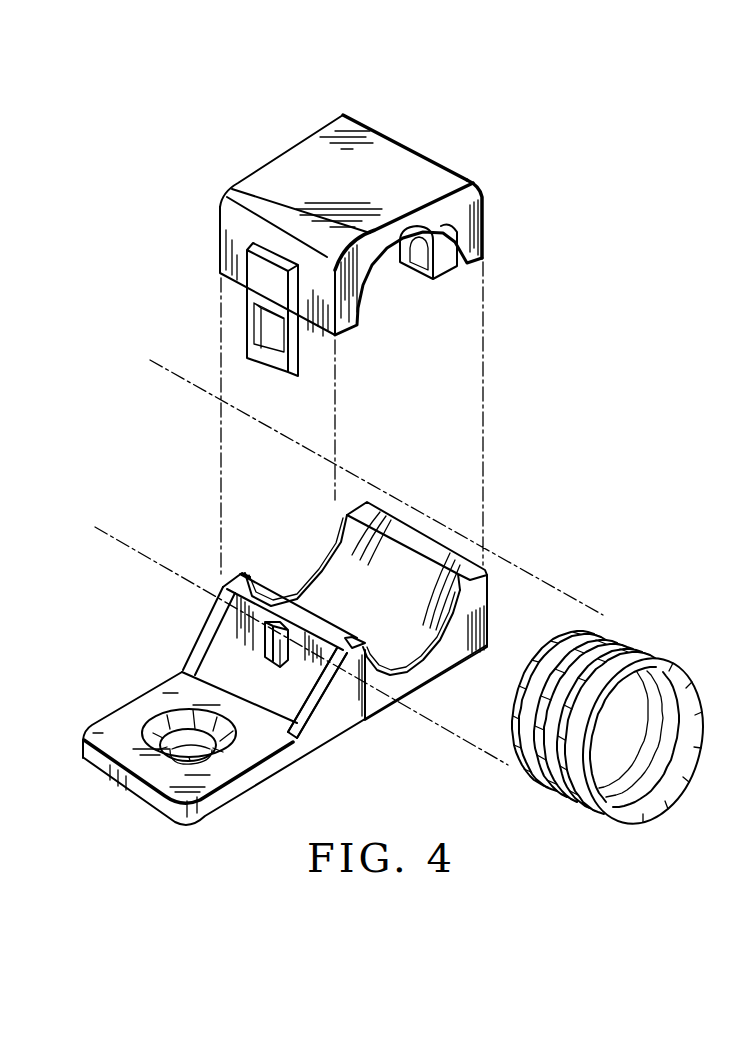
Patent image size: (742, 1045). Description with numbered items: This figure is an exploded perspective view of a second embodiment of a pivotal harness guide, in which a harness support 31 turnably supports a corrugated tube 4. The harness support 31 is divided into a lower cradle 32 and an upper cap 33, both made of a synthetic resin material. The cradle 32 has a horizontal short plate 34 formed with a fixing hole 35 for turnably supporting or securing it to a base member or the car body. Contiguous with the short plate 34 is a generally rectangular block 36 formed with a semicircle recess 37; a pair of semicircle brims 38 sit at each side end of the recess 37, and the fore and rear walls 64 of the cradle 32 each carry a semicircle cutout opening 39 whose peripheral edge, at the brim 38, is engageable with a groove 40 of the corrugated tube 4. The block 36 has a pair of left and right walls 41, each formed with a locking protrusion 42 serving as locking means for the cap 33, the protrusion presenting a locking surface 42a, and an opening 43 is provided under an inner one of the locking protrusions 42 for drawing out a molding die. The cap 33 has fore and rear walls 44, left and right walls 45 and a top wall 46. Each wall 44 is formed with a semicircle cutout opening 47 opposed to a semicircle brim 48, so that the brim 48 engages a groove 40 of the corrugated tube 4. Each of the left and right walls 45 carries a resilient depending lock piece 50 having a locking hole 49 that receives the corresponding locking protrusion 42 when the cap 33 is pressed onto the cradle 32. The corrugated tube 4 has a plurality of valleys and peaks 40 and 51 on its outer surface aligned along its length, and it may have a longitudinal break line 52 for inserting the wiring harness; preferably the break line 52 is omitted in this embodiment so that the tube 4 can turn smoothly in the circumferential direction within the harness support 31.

The corrugated tube 4 is at (556, 800).
The harness support 31 is at (592, 271).
The cradle 32 is at (443, 525).
The cap 33 is at (497, 254).
The short plate 34 is at (170, 690).
The fixing hole 35 is at (123, 780).
The block 36 is at (227, 578).
The semicircle recess 37 is at (407, 553).
The semicircle brim 38 is at (317, 580).
The semicircle cutout opening 39 is at (290, 580).
The groove 40 is at (520, 762).
The left and right walls 41 is at (247, 625).
The locking protrusion 42 is at (264, 668).
The catch surface 42a is at (282, 652).
The opening 43 is at (235, 650).
The fore and rear walls 44 is at (347, 290).
The left and right walls 45 is at (240, 227).
The top wall 46 is at (312, 143).
The semicircle cutout opening 47 is at (395, 272).
The semicircle brim 48 is at (398, 243).
The locking hole 49 is at (266, 326).
The lock piece 50 is at (238, 298).
The peaks 51 is at (612, 628).
The break line 52 is at (647, 643).
The fore and rear walls 64 is at (352, 673).